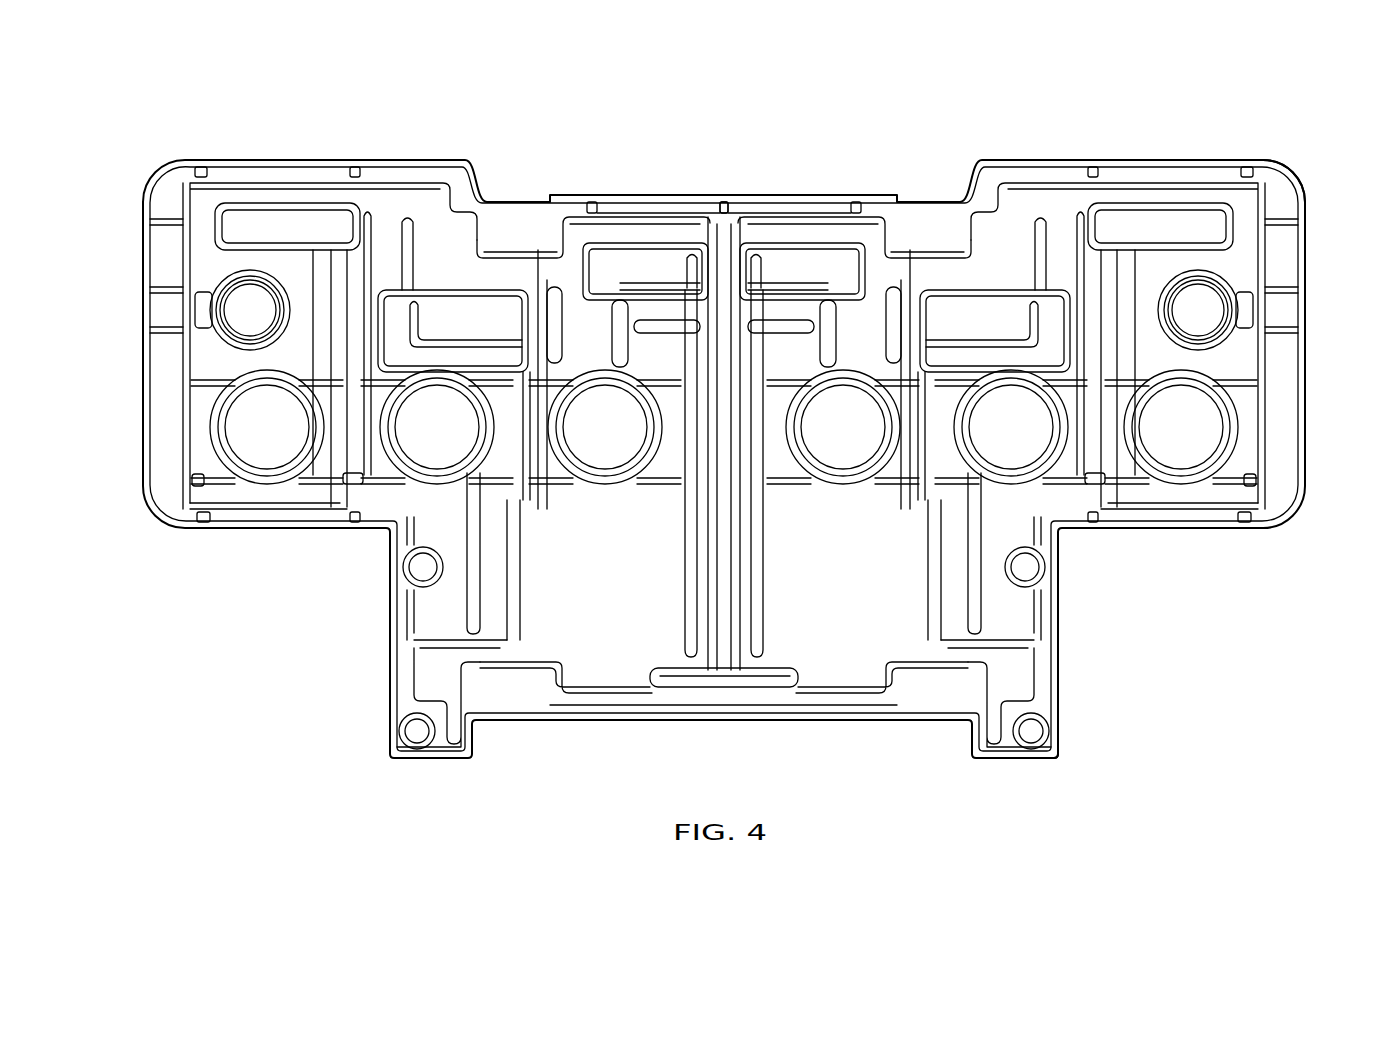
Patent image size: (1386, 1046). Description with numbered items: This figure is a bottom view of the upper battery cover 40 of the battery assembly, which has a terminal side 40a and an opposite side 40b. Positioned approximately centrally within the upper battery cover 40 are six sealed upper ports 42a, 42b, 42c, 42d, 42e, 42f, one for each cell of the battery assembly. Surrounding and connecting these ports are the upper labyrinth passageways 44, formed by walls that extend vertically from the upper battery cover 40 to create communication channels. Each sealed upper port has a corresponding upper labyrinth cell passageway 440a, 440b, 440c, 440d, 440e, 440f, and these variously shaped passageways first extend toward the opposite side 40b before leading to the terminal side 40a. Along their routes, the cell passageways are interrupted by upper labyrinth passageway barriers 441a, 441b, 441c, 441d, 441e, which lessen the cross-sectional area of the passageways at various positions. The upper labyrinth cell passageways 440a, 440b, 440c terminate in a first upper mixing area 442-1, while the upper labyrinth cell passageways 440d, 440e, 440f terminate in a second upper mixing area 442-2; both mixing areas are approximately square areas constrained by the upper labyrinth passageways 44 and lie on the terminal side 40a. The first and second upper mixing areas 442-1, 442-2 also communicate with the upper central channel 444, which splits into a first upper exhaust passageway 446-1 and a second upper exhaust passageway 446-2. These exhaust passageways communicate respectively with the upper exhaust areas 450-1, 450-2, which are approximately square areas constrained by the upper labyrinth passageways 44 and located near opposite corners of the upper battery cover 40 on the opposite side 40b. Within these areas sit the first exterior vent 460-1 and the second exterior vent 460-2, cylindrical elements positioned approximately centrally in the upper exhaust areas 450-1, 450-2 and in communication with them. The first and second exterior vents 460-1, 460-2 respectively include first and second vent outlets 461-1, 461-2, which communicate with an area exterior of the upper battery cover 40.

The upper battery cover 40 is at (173, 116).
The terminal side 40a is at (1041, 765).
The opposite side 40b is at (1293, 166).
The sealed upper port 42a is at (1196, 439).
The sealed upper port 42b is at (1026, 439).
The sealed upper port 42c is at (858, 439).
The sealed upper port 42d is at (620, 439).
The sealed upper port 42e is at (452, 439).
The sealed upper port 42f is at (282, 439).
The upper labyrinth passageways 44 is at (440, 656).
The upper labyrinth cell passageway 440a is at (1097, 480).
The upper labyrinth cell passageway 440b is at (998, 331).
The upper labyrinth cell passageway 440c is at (838, 276).
The upper labyrinth cell passageway 440d is at (660, 276).
The upper labyrinth cell passageway 440e is at (495, 331).
The upper labyrinth cell passageway 440f is at (237, 494).
The upper labyrinth passageway barrier 441a is at (1246, 480).
The upper labyrinth passageway barrier 441b is at (925, 362).
The upper labyrinth passageway barrier 441c is at (738, 372).
The upper labyrinth passageway barrier 441d is at (697, 368).
The upper labyrinth passageway barrier 441e is at (514, 370).
The first upper mixing area 442-1 is at (886, 575).
The second upper mixing area 442-2 is at (627, 575).
The upper central channel 444 is at (725, 686).
The first upper exhaust passageway 446-1 is at (833, 235).
The second upper exhaust passageway 446-2 is at (620, 235).
The upper exhaust area 450-1 is at (1245, 250).
The upper exhaust area 450-2 is at (203, 228).
The first exterior vent 460-1 is at (1197, 290).
The second exterior vent 460-2 is at (262, 290).
The first vent outlet 461-1 is at (1305, 315).
The second vent outlet 461-2 is at (143, 283).